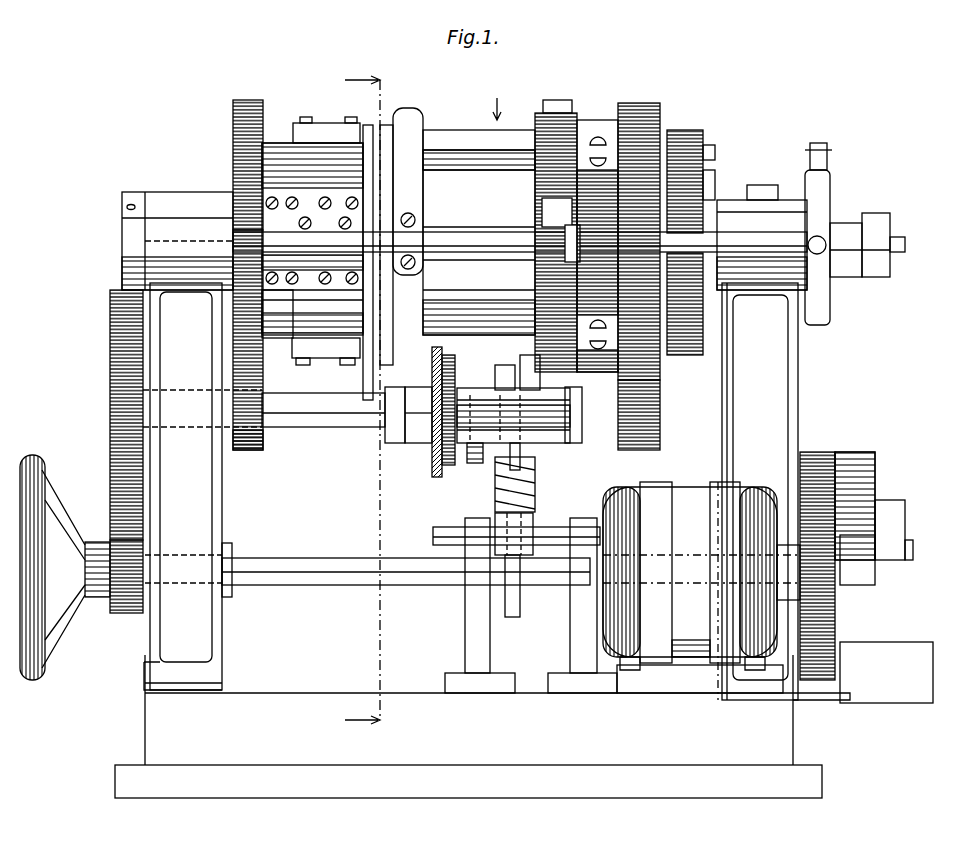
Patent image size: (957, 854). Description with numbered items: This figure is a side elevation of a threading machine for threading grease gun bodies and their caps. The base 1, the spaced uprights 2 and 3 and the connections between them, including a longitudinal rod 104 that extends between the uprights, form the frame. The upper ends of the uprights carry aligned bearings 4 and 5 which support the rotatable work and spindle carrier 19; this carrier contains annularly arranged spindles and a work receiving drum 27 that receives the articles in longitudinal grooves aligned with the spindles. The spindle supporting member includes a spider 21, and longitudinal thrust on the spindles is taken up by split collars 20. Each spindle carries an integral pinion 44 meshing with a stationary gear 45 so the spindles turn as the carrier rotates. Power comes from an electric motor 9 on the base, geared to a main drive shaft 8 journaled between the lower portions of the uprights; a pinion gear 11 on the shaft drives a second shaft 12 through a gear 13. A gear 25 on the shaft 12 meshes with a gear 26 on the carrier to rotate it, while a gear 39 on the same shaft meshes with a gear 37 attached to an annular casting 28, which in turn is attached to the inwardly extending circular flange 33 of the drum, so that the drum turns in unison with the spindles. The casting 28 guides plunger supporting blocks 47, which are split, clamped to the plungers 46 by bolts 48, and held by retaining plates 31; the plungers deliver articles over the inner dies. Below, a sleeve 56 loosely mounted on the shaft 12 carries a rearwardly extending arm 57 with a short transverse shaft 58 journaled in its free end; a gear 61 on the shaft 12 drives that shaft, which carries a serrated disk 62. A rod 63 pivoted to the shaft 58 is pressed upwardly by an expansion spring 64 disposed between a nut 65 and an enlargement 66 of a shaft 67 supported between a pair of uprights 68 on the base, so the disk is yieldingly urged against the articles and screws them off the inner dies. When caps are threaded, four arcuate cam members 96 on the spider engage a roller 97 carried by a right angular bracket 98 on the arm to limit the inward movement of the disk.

The base 1 is at (793, 742).
The upright 2 is at (205, 623).
The upright 3 is at (722, 460).
The bearing 4 is at (178, 205).
The bearing 5 is at (790, 200).
The main drive shaft 8 is at (330, 580).
The electric motor 9 is at (768, 577).
The pinion gear 11 is at (116, 613).
The second shaft 12 is at (330, 427).
The gear 13 is at (110, 360).
The work and spindle carrier 19 is at (498, 98).
The split collars 20 is at (595, 126).
The spider 21 is at (570, 125).
The gear 25 is at (645, 450).
The gear 26 is at (638, 103).
The work receiving drum 27 is at (440, 185).
The annular casting 28 is at (240, 158).
The retaining plates 31 is at (297, 320).
The circular flange 33 is at (368, 125).
The gear 37 is at (250, 100).
The gear 39 is at (250, 450).
The pinion 44 is at (690, 130).
The stationary gear 45 is at (705, 186).
The plungers 46 is at (385, 130).
The plunger supporting blocks 47 is at (345, 135).
The bolts 48 is at (312, 117).
The sleeve 56 is at (576, 443).
The arm 57 is at (530, 425).
The transverse shaft 58 is at (530, 408).
The gear 61 is at (432, 457).
The disk 62 is at (442, 371).
The rod 63 is at (522, 450).
The expansion spring 64 is at (535, 490).
The nut 65 is at (476, 463).
The enlargement 66 is at (533, 526).
The shaft 67 is at (560, 530).
The uprights 68 is at (470, 633).
The arcuate cam members 96 is at (560, 100).
The roller 97 is at (520, 355).
The right angular bracket 98 is at (505, 365).
The longitudinal rod 104 is at (455, 232).